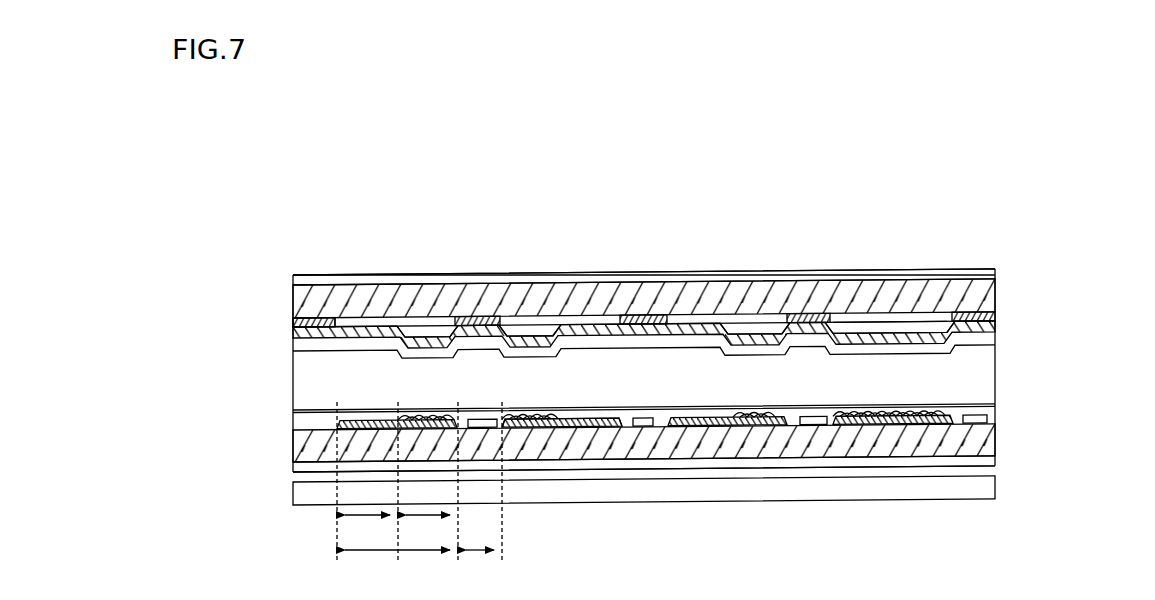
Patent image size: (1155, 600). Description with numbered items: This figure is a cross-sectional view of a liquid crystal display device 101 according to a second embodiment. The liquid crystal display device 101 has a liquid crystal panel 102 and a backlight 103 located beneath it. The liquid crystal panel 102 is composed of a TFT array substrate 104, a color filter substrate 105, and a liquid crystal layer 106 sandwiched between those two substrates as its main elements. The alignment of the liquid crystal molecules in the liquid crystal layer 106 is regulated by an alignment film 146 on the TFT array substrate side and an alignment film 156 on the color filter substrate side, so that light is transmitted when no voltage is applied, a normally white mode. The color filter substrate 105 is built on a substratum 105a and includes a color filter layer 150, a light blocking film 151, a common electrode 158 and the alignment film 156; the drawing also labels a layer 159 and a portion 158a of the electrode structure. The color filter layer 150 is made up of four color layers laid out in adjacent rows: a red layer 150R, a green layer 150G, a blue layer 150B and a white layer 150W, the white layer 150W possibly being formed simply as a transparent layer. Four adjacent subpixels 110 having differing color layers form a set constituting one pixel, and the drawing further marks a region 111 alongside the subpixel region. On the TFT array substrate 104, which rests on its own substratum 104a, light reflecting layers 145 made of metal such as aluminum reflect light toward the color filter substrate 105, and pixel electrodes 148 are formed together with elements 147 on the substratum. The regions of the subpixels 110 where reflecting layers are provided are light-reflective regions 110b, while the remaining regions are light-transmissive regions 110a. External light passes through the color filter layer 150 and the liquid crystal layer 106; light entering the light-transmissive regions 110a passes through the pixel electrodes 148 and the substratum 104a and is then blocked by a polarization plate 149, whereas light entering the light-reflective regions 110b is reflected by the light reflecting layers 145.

The liquid crystal display device 101 is at (850, 181).
The liquid crystal panel 102 is at (274, 302).
The backlight 103 is at (274, 497).
The TFT array substrate 104 is at (712, 459).
The substratum 104a is at (995, 438).
The color filter substrate 105 is at (712, 290).
The substratum 105a is at (995, 295).
The liquid crystal layer 106 is at (293, 378).
The subpixels 110 is at (397, 566).
The light-transmissive regions 110a is at (371, 531).
The light-reflective regions 110b is at (429, 531).
The non-pixel region 111 is at (482, 566).
The light reflecting layers 145 is at (527, 430).
The alignment film 146 is at (995, 405).
The pixel definition film 147 is at (638, 434).
The pixel electrodes 148 is at (995, 416).
The polarization plate 149 is at (681, 469).
The color filter layer 150 is at (676, 262).
The red layer 150R is at (432, 322).
The green layer 150G is at (549, 322).
The blue layer 150B is at (698, 316).
The white layer 150W is at (858, 283).
The light blocking film 151 is at (322, 322).
The alignment film 156 is at (680, 340).
The common electrode 158 is at (995, 318).
The light-shielding layer thin portion 158a is at (912, 323).
The counter substrate glass 159 is at (995, 273).